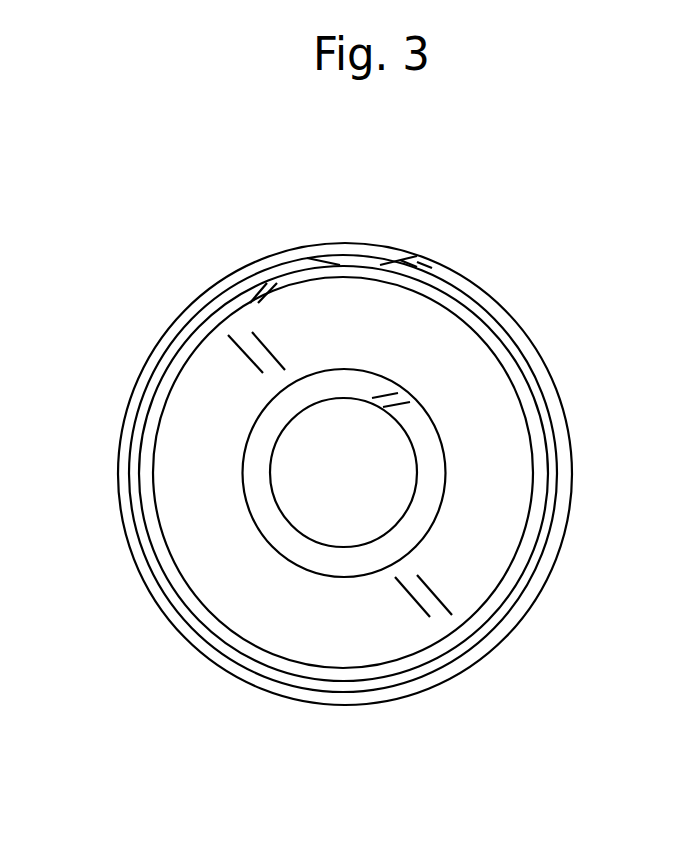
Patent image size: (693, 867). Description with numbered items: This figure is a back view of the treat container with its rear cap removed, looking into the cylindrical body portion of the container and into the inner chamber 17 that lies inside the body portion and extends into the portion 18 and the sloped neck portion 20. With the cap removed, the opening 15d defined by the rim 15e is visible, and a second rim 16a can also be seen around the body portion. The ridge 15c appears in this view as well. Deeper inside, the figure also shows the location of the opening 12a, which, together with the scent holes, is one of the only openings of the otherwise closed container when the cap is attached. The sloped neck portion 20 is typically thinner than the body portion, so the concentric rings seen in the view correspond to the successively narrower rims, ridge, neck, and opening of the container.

The opening 12a is at (328, 475).
The ridge 15c is at (485, 315).
The opening 15d is at (365, 622).
The rim 15e is at (435, 295).
The rim 16a is at (368, 252).
The inner chamber 17 is at (210, 413).
The portion 18 is at (470, 388).
The sloped neck portion 20 is at (423, 470).